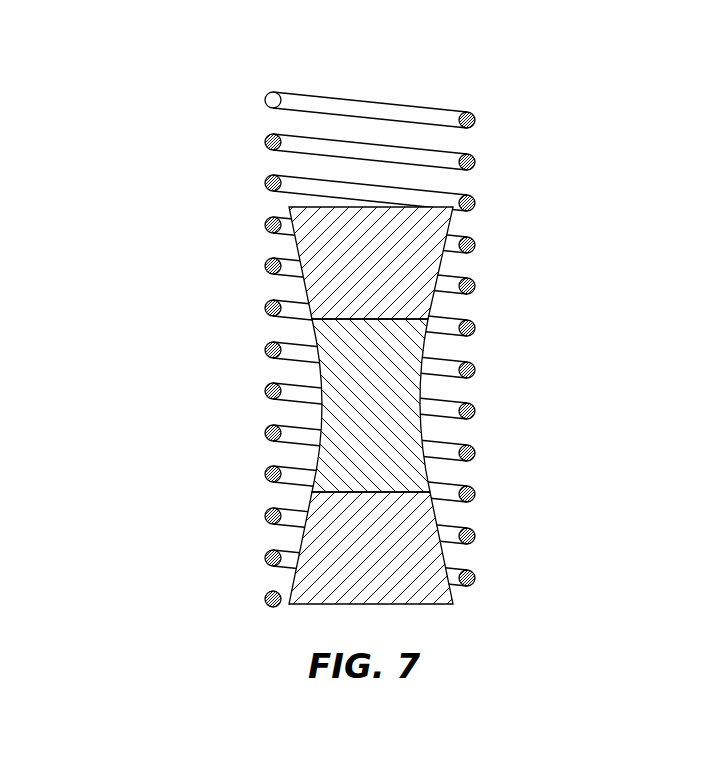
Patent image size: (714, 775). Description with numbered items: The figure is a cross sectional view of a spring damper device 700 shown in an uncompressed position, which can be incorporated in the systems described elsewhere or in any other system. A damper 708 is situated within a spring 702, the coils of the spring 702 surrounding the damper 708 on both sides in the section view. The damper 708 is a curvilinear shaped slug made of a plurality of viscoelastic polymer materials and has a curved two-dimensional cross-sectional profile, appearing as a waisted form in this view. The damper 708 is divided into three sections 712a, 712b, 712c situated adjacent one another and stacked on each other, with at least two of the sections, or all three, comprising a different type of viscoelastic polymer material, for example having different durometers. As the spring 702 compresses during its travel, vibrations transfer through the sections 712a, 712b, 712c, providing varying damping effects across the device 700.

The spring damper device 700 is at (169, 106).
The spring 702 is at (267, 268).
The damper 708 is at (290, 418).
The section 712a is at (423, 262).
The section 712b is at (393, 392).
The section 712c is at (422, 553).